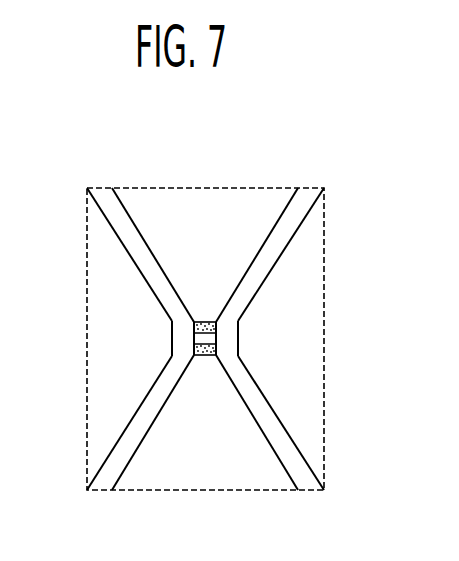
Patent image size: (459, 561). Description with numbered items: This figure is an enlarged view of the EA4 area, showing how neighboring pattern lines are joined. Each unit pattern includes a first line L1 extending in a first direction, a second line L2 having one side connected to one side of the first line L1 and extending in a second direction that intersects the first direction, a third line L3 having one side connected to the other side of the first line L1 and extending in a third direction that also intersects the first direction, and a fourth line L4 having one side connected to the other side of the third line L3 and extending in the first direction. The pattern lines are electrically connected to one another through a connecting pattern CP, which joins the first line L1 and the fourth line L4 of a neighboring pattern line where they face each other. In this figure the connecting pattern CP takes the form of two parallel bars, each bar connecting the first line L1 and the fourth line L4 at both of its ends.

The EA4 area EA4 is at (250, 174).
The first line L1 is at (233, 338).
The second line L2 is at (268, 264).
The third line L3 is at (140, 264).
The fourth line L4 is at (177, 338).
The connecting pattern CP is at (205, 322).